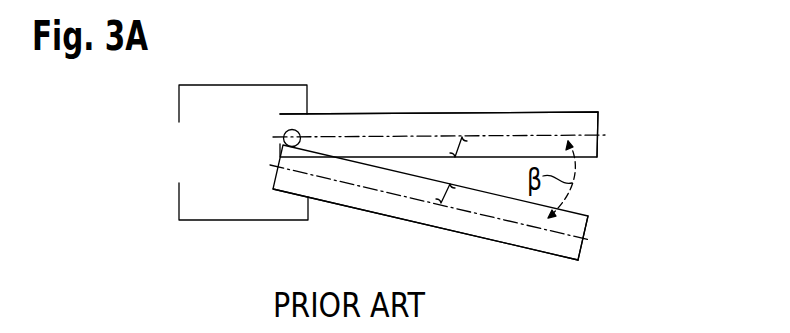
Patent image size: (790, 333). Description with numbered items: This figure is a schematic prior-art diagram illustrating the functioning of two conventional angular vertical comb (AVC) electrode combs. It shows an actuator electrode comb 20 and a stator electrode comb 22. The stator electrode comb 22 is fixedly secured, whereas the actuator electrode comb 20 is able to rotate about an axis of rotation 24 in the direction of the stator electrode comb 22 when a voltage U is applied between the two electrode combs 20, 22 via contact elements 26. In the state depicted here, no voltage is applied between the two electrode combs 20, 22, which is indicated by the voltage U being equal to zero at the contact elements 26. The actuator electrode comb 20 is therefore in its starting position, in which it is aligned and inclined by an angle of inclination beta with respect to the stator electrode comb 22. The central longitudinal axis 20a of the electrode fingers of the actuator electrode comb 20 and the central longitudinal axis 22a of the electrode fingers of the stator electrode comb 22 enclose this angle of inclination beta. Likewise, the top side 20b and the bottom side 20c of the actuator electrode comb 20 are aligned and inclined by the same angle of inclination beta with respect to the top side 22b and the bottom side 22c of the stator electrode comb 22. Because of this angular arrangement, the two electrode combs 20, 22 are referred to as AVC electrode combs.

The actuator electrode comb 20 is at (366, 122).
The central longitudinal axis 20a is at (424, 135).
The top side 20b is at (490, 102).
The bottom side 20c is at (587, 159).
The stator electrode comb 22 is at (378, 200).
The central longitudinal axis 22a is at (453, 208).
The top side 22b is at (587, 216).
The bottom side 22c is at (497, 242).
The axis of rotation 24 is at (293, 129).
The contact elements 26 is at (260, 85).